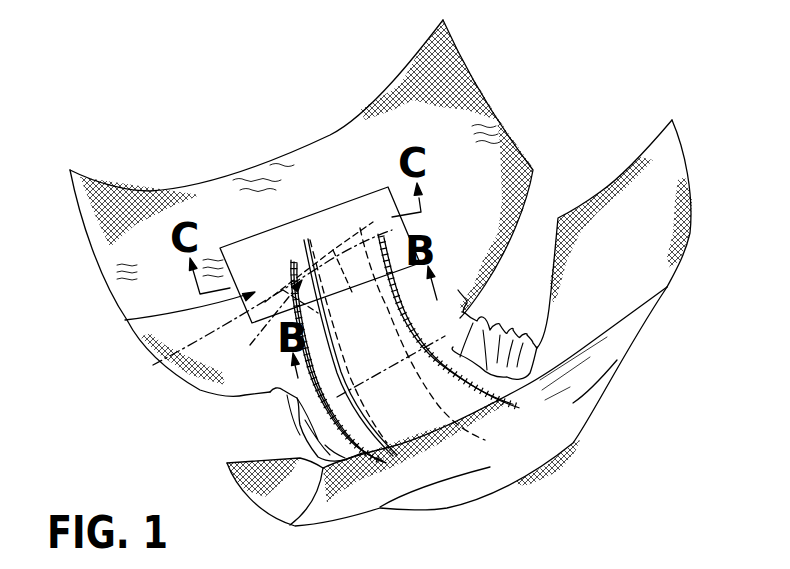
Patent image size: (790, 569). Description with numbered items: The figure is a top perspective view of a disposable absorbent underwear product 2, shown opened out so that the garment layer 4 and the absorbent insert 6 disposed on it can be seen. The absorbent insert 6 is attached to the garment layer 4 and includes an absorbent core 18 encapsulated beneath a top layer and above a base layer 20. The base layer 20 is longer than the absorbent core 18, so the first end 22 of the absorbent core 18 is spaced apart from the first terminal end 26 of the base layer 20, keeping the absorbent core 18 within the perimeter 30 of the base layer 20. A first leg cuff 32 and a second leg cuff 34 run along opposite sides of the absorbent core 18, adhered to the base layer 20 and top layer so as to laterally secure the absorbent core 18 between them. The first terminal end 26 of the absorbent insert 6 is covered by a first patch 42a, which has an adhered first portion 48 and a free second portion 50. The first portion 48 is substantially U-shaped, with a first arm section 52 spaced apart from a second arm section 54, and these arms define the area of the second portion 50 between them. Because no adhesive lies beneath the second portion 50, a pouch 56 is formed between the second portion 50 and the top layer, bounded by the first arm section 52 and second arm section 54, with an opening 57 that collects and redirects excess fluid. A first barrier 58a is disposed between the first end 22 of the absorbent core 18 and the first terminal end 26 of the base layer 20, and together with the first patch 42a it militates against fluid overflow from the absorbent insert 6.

The disposable absorbent underwear product 2 is at (80, 158).
The garment layer 4 is at (120, 192).
The absorbent insert 6 is at (440, 316).
The absorbent core 18 is at (356, 402).
The base layer 20 is at (287, 267).
The first end 22 is at (300, 267).
The first terminal end 26 is at (283, 292).
The perimeter 30 is at (254, 243).
The first leg cuff 32 is at (320, 427).
The second leg cuff 34 is at (478, 365).
The first patch 42a is at (340, 220).
The first portion 48 is at (360, 190).
The second portion 50 is at (265, 328).
The first arm section 52 is at (125, 320).
The second arm section 54 is at (392, 236).
The pouch 56 is at (153, 365).
The opening 57 is at (328, 316).
The first barrier 58a is at (350, 310).